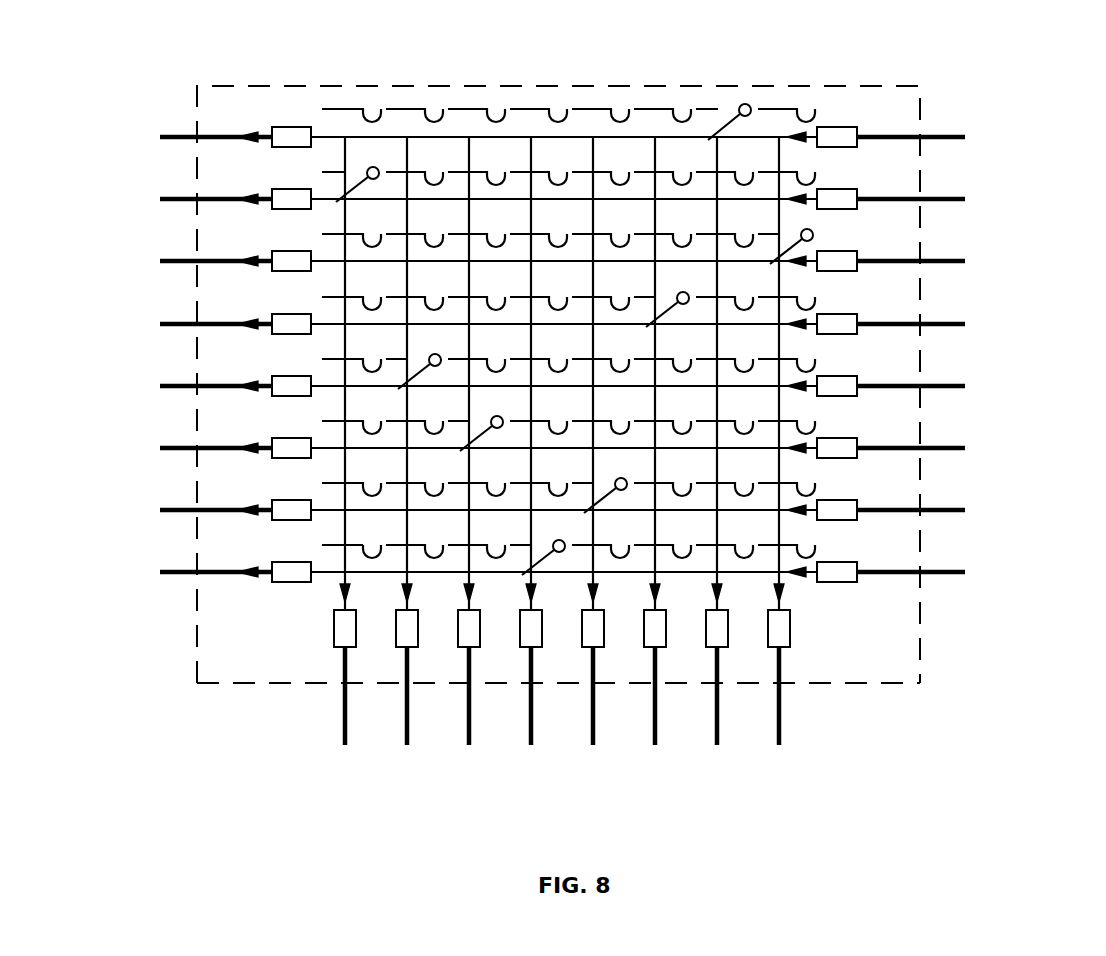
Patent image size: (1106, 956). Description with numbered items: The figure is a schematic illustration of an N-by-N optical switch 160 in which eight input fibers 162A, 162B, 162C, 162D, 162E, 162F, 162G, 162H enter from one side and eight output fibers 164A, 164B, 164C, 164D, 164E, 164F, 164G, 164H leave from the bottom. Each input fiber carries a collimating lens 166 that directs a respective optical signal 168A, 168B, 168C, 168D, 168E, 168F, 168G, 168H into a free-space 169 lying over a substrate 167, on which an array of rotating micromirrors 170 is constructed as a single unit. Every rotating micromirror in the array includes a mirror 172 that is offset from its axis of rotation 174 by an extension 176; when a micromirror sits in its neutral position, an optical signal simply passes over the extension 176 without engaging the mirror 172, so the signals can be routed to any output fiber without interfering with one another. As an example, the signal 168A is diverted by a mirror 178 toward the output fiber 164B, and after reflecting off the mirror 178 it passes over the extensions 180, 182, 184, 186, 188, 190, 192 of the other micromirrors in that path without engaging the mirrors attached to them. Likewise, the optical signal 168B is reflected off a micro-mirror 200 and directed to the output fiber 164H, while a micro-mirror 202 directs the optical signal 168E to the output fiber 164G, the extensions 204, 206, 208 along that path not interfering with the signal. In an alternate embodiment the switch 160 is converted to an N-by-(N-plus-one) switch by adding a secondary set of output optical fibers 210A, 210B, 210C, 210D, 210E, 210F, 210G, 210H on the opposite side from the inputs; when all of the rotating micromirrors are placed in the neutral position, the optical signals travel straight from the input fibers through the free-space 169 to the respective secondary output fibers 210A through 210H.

The N×N optical switch 160 is at (125, 85).
The input fiber 162A is at (945, 140).
The input fiber 162B is at (942, 202).
The input fiber 162C is at (942, 264).
The input fiber 162D is at (942, 327).
The input fiber 162E is at (942, 389).
The input fiber 162F is at (942, 451).
The input fiber 162G is at (942, 513).
The input fiber 162H is at (942, 575).
The output fiber 164A is at (778, 728).
The output fiber 164B is at (716, 728).
The output fiber 164C is at (654, 728).
The output fiber 164D is at (592, 728).
The output fiber 164E is at (530, 728).
The output fiber 164F is at (468, 728).
The output fiber 164G is at (406, 728).
The output fiber 164H is at (344, 728).
The collimating lens 166 is at (856, 127).
The substrate 167 is at (865, 705).
The optical signal 168A is at (806, 132).
The optical signal 168B is at (800, 195).
The optical signal 168C is at (800, 257).
The optical signal 168D is at (800, 320).
The optical signal 168E is at (800, 382).
The optical signal 168F is at (800, 444).
The optical signal 168G is at (800, 506).
The optical signal 168H is at (800, 568).
The free-space 169 is at (365, 152).
The array of rotating micromirrors 170 is at (369, 72).
The mirror 172 is at (325, 545).
The axis of rotation 174 is at (372, 554).
The extension 176 is at (344, 550).
The mirror 178 is at (718, 132).
The extension 180 is at (716, 169).
The extension 182 is at (716, 231).
The extension 184 is at (716, 294).
The extension 186 is at (716, 356).
The extension 188 is at (716, 418).
The extension 190 is at (716, 480).
The extension 192 is at (716, 542).
The micro-mirror 200 is at (344, 202).
The micro-mirror 202 is at (400, 386).
The extension 204 is at (418, 421).
The extension 206 is at (418, 483).
The extension 208 is at (418, 545).
The secondary output optical fiber 210A is at (172, 135).
The secondary output optical fiber 210B is at (172, 197).
The secondary output optical fiber 210C is at (172, 259).
The secondary output optical fiber 210D is at (172, 322).
The secondary output optical fiber 210E is at (172, 384).
The secondary output optical fiber 210F is at (172, 446).
The secondary output optical fiber 210G is at (172, 508).
The secondary output optical fiber 210H is at (172, 570).